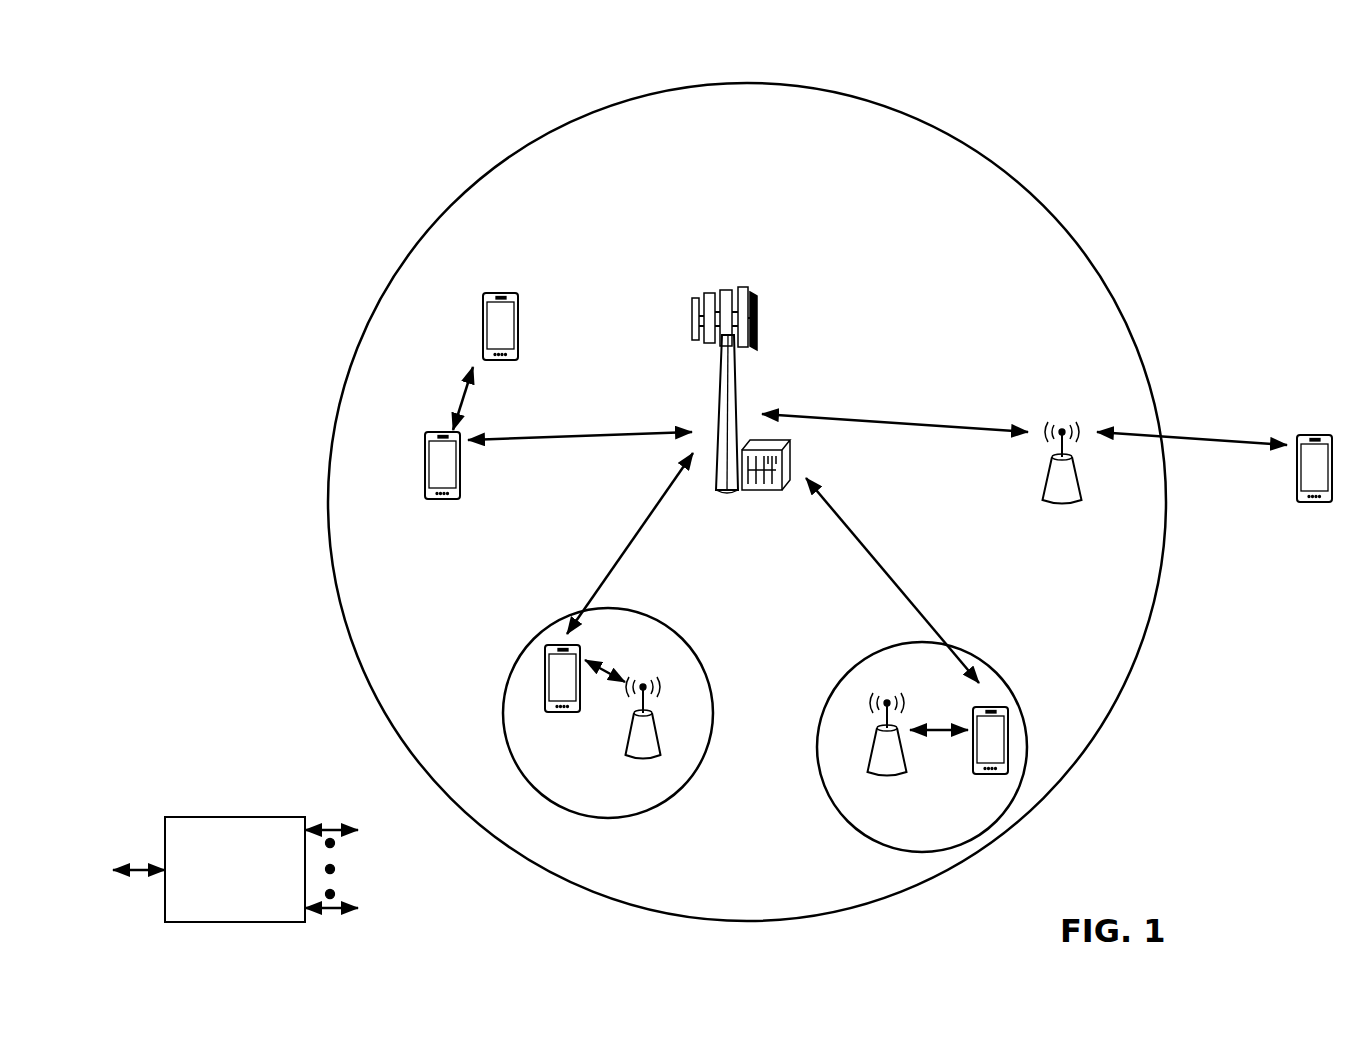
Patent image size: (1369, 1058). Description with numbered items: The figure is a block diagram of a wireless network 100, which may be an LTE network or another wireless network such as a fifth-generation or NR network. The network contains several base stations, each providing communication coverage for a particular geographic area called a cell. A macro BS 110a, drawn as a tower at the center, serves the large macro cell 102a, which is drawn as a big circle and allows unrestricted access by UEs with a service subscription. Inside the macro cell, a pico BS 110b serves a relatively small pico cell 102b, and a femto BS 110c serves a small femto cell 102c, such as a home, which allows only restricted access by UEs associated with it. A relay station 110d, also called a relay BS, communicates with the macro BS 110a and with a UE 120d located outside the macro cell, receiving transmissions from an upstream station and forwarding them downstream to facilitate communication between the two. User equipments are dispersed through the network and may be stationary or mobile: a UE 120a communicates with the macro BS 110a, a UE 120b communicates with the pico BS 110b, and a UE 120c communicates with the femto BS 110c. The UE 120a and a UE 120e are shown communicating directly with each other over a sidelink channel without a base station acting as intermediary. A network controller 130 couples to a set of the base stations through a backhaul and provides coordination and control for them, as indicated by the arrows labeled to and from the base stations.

The wireless network 100 is at (216, 77).
The macro cell 102a is at (1028, 190).
The pico cell 102b is at (697, 650).
The femto cell 102c is at (862, 660).
The macro BS 110a is at (742, 284).
The pico BS 110b is at (662, 750).
The femto BS 110c is at (870, 762).
The relay station 110d is at (1062, 426).
The UE 120a is at (425, 462).
The UE 120b is at (549, 713).
The UE 120c is at (975, 775).
The UE 120d is at (1328, 434).
The UE 120e is at (483, 312).
The network controller 130 is at (235, 817).